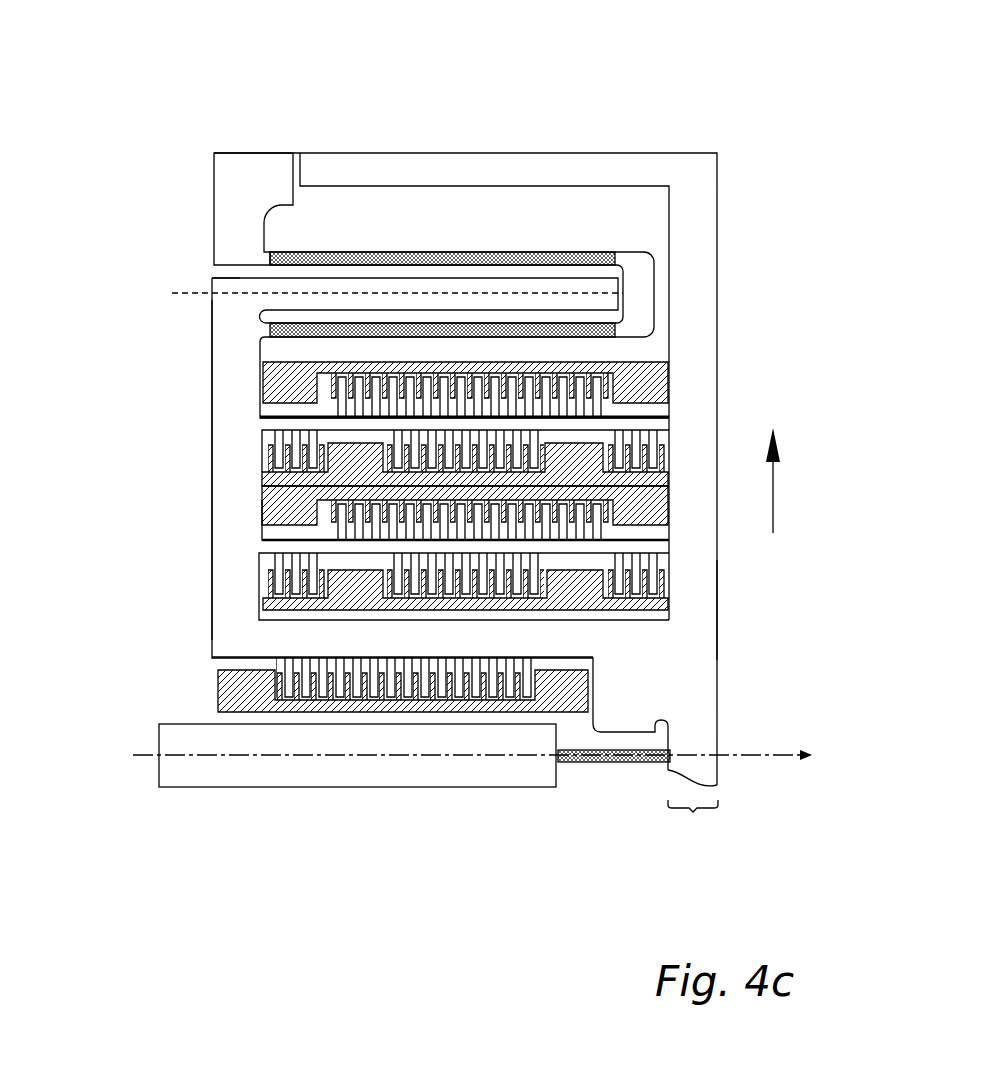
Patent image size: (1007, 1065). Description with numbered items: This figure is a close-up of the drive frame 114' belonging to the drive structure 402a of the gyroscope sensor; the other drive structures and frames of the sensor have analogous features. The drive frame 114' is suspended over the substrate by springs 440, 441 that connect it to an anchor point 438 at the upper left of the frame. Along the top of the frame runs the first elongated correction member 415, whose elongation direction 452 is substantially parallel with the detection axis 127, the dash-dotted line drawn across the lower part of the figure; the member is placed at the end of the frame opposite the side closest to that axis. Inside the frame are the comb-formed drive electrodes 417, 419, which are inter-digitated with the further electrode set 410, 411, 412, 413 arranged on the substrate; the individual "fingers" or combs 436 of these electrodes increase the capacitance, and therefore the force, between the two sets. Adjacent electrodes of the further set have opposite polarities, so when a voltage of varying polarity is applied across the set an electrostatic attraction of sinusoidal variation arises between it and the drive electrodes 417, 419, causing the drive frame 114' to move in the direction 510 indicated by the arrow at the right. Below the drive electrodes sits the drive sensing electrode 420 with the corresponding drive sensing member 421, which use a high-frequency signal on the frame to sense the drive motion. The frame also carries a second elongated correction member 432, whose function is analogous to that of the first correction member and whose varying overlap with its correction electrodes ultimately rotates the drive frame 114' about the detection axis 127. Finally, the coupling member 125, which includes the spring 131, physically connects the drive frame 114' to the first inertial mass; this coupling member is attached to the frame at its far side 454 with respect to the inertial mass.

The second elongated correction member 432 is at (534, 170).
The anchor point 438 is at (241, 172).
The spring 440 is at (463, 251).
The spring 441 is at (355, 328).
The first elongated correction member 415 is at (405, 293).
The elongation direction 452 is at (225, 287).
The electrode of further electrode set 410 is at (292, 365).
The drive electrode 417 is at (310, 423).
The electrode of further electrode set 411 is at (353, 460).
The electrode of further electrode set 412 is at (290, 515).
The electrode of further electrode set 413 is at (262, 560).
The drive electrode 419 is at (343, 597).
The comb finger 436 is at (268, 570).
The drive sensing electrode 420 is at (235, 683).
The drive sensing member 421 is at (285, 670).
The drive structure 402a is at (145, 462).
The first drive frame 114' is at (776, 610).
The direction of motion 510 is at (797, 480).
The coupling member 125 is at (350, 770).
The spring 131 is at (625, 760).
The detection axis 127 is at (758, 760).
The far side 454 is at (693, 812).